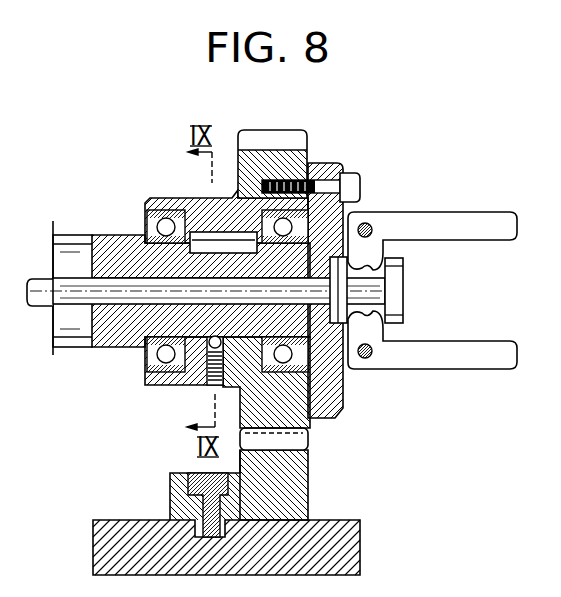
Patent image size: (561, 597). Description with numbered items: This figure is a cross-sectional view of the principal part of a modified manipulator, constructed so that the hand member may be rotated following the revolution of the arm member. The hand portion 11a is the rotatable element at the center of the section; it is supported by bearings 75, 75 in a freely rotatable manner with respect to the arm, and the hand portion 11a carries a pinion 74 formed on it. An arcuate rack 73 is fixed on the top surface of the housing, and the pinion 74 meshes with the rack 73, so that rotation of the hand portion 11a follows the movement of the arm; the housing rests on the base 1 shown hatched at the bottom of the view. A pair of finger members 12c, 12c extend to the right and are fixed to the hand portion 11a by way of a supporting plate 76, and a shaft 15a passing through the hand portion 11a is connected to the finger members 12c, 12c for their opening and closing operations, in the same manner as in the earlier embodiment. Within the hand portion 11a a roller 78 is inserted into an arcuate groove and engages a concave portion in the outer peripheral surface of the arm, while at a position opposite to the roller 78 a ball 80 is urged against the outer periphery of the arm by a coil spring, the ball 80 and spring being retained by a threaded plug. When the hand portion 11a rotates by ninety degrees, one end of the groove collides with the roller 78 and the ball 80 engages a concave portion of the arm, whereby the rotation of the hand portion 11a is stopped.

The base 1 is at (345, 518).
The arcuate rack 73 is at (309, 450).
The pinion 74 is at (272, 142).
The bearings 75 is at (148, 205).
The supporting plate 76 is at (331, 403).
The roller 78 is at (226, 240).
The ball 80 is at (197, 377).
The hand portion 11a is at (153, 387).
The finger members 12c is at (460, 223).
The shaft 15a is at (394, 285).